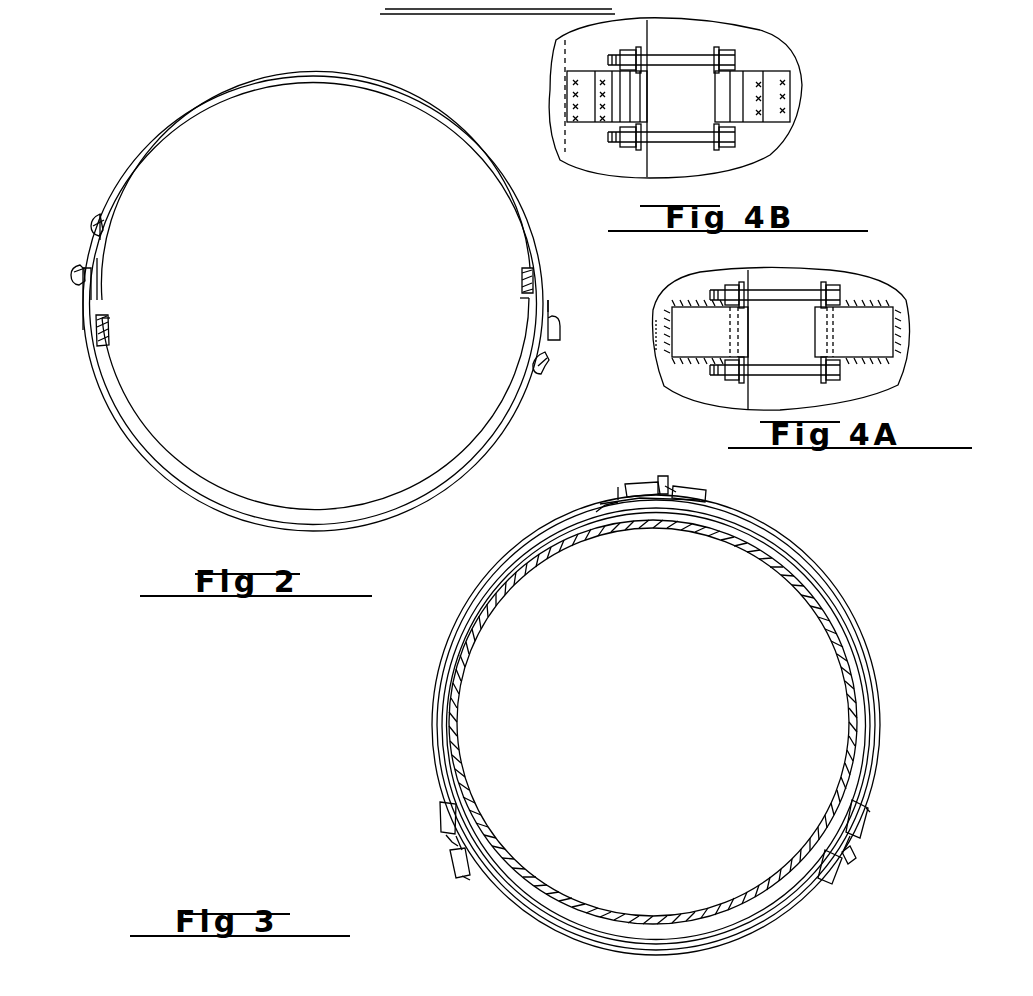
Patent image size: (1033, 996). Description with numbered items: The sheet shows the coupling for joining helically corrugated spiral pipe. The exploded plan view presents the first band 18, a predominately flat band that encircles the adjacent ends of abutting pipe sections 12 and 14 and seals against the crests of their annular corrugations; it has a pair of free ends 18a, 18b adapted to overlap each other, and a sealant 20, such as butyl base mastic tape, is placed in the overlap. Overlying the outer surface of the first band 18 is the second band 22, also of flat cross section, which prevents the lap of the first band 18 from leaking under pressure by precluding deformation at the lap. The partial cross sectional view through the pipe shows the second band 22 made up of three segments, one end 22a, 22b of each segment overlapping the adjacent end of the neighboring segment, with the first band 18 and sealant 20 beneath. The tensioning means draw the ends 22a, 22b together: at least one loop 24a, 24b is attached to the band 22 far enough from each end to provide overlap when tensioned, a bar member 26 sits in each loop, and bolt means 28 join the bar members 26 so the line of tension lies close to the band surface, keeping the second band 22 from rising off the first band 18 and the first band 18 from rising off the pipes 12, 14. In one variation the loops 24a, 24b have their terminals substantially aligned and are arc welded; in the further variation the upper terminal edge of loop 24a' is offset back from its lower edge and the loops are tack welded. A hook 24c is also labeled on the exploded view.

In FIG. 3, the pipe section 12 is at (775, 541).
In FIG. 3, the pipe section 14 is at (478, 641).
In FIG. 2, the first band 18 is at (118, 249).
In FIG. 3, the first band 18 is at (455, 691).
In FIG. 2, the free end of first band 18a is at (112, 318).
In FIG. 2, the free end of first band 18b is at (95, 334).
In FIG. 2, the sealant 20 is at (112, 331).
In FIG. 3, the sealant 20 is at (600, 506).
In FIG. 2, the second band 22 is at (372, 86).
In FIG. 3, the second band 22 is at (850, 636).
In FIG. 2, the free end of second band 22a is at (97, 258).
In FIG. 3, the free end of second band 22a is at (660, 504).
In FIG. 4B, the free end of second band 22a is at (702, 40).
In FIG. 4A, the free end of second band 22a is at (778, 280).
In FIG. 2, the free end of second band 22b is at (84, 293).
In FIG. 3, the free end of second band 22b is at (618, 487).
In FIG. 4A, the free end of second band 22b is at (720, 276).
In FIG. 3, the loop 24a is at (621, 704).
In FIG. 4A, the loop 24a is at (889, 332).
In FIG. 4B, the loop 24a' is at (802, 96).
In FIG. 2, the loop 24b is at (77, 283).
In FIG. 3, the loop 24b is at (642, 484).
In FIG. 4B, the loop 24b is at (598, 72).
In FIG. 4A, the loop 24b is at (696, 312).
In FIG. 2, the hook 24c is at (100, 214).
In FIG. 3, the bar member 26 is at (656, 483).
In FIG. 4B, the bar member 26 is at (650, 52).
In FIG. 4A, the bar member 26 is at (741, 290).
In FIG. 3, the bolt means 28 is at (680, 486).
In FIG. 4B, the bolt means 28 is at (702, 143).
In FIG. 4A, the bolt means 28 is at (790, 373).